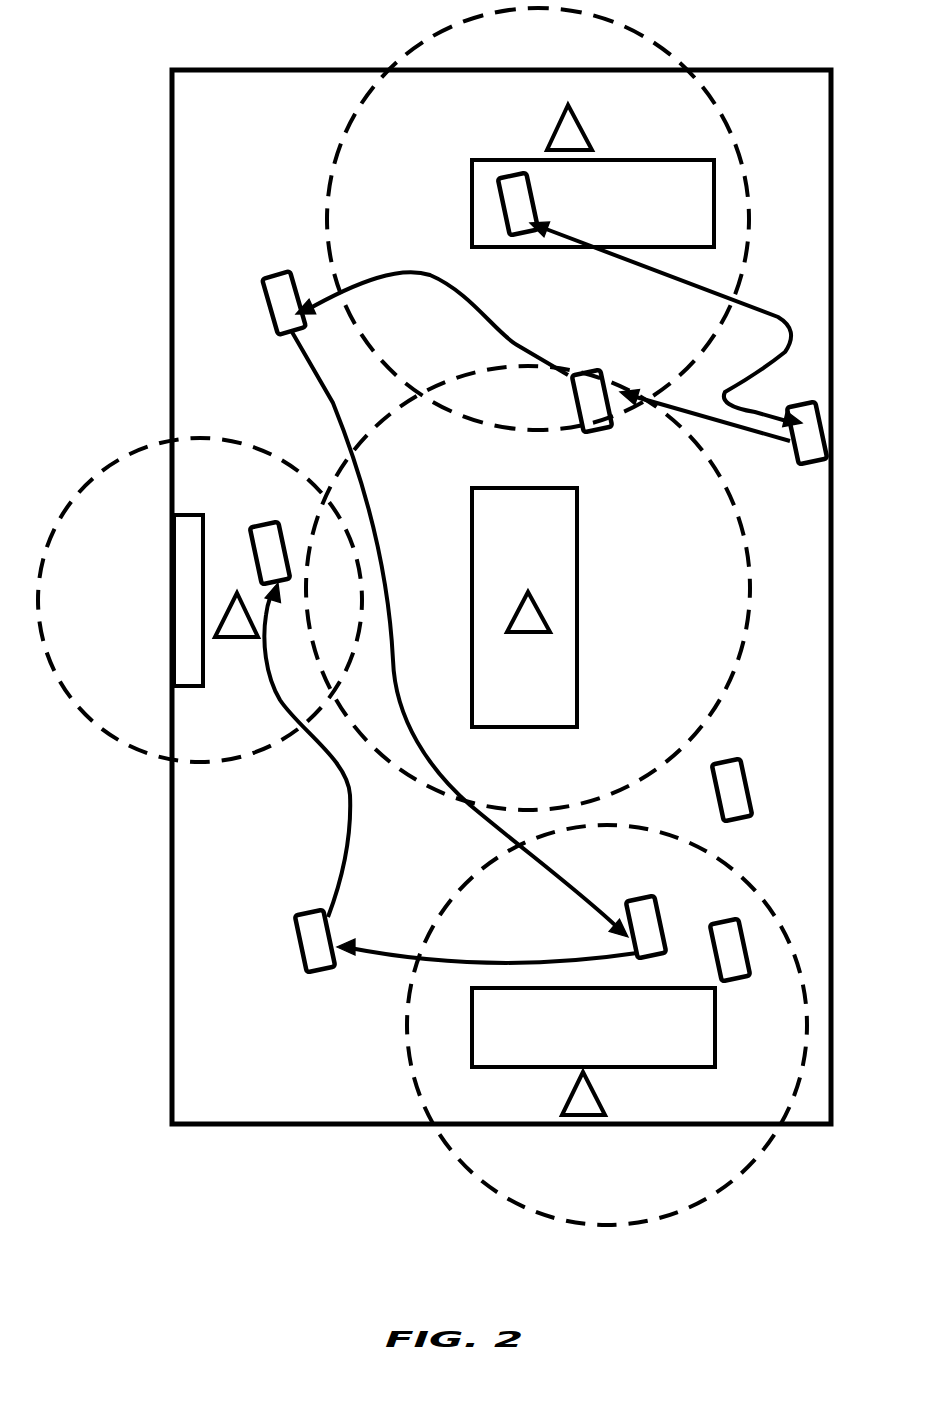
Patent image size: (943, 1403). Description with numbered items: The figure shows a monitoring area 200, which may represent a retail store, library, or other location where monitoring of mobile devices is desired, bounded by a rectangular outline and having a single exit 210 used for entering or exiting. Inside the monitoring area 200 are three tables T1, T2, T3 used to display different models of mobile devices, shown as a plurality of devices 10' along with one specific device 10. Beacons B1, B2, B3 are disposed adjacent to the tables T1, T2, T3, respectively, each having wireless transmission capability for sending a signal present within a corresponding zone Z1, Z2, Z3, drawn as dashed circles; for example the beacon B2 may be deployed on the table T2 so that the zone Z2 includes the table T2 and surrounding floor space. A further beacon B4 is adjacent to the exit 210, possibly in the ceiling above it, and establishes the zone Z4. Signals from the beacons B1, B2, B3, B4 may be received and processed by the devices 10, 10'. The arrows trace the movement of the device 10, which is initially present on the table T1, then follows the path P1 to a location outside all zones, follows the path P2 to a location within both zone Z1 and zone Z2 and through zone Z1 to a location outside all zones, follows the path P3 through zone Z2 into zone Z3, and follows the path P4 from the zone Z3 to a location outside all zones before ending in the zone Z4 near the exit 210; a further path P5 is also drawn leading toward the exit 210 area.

The monitoring area 200 is at (308, 1125).
The exit 210 is at (172, 602).
The device 10 is at (516, 602).
The devices 10' is at (761, 870).
The zone Z1 is at (740, 137).
The zone Z2 is at (738, 653).
The zone Z3 is at (411, 1005).
The zone Z4 is at (215, 760).
The table T1 is at (472, 180).
The table T2 is at (472, 577).
The table T3 is at (715, 1024).
The beacon B1 is at (556, 130).
The beacon B2 is at (530, 636).
The beacon B3 is at (572, 1085).
The beacon B4 is at (238, 640).
The path P1 is at (725, 282).
The path P2 is at (490, 312).
The path P3 is at (333, 405).
The path P4 is at (415, 962).
The path 5 P5 is at (347, 780).